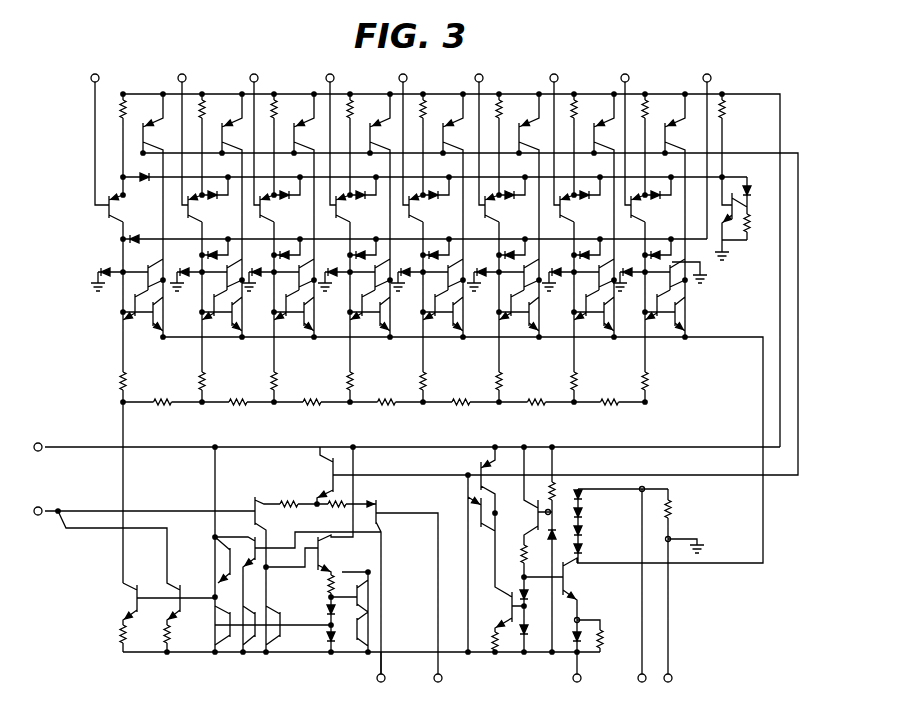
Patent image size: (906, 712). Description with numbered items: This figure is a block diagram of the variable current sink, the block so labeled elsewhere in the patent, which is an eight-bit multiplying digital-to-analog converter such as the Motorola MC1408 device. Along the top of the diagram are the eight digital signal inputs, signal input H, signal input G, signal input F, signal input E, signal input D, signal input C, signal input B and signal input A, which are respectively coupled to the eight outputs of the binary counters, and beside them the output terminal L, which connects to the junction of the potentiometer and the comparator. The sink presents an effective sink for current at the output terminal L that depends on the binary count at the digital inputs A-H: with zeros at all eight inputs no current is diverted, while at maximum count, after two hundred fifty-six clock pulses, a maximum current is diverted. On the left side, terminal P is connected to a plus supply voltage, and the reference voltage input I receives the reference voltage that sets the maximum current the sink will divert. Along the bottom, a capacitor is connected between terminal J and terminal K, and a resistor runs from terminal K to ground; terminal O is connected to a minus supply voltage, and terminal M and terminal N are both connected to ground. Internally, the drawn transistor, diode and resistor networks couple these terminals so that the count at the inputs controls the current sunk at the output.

The signal input H is at (95, 68).
The signal input G is at (182, 68).
The signal input F is at (254, 68).
The signal input E is at (330, 68).
The signal input D is at (403, 68).
The signal input C is at (479, 68).
The signal input B is at (554, 68).
The signal input A is at (626, 68).
The output terminal L is at (707, 146).
The terminal P is at (29, 446).
The reference voltage input I is at (29, 510).
The terminal J is at (379, 689).
The terminal K is at (438, 689).
The terminal O is at (577, 689).
The terminal M is at (641, 689).
The terminal N is at (668, 689).